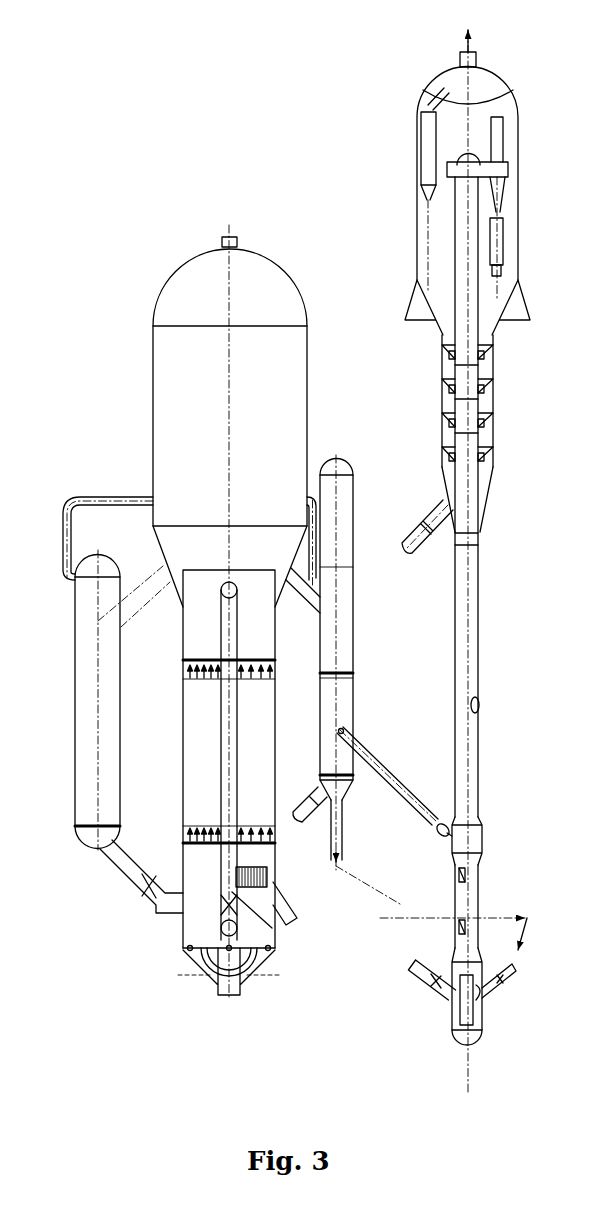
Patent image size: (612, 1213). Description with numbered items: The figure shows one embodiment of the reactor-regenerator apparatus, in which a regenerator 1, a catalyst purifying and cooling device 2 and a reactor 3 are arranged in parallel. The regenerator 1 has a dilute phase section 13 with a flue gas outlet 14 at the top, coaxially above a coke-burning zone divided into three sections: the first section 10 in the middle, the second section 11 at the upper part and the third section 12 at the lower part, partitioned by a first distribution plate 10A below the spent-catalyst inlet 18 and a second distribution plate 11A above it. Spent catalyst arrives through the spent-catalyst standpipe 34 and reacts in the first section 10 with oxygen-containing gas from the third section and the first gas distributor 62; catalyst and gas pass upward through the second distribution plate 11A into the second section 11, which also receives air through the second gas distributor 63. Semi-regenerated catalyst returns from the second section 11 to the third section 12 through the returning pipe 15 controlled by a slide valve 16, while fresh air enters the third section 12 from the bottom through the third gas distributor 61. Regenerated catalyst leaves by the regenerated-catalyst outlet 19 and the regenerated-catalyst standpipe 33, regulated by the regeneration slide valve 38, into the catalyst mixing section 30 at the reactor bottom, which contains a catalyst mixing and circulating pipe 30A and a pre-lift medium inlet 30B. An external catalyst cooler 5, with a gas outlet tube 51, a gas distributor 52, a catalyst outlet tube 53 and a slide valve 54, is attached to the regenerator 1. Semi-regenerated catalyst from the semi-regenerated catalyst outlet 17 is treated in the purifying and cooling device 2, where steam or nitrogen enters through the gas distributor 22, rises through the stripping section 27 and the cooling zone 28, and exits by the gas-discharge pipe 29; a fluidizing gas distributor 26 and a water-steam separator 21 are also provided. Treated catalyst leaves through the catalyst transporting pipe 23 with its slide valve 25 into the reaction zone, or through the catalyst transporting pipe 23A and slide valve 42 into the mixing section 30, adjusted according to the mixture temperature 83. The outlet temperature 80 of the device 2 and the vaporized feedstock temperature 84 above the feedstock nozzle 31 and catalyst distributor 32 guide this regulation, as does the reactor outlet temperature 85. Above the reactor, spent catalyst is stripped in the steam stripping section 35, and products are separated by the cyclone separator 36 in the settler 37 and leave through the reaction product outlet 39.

The regenerator 1 is at (160, 375).
The dilute phase section of regenerator 13 is at (197, 445).
The flue gas outlet 14 is at (222, 245).
The second section of regenerator 11 is at (198, 618).
The first section of regenerator 10 is at (202, 745).
The second gas distributor 63 is at (190, 660).
The first gas distributor 62 is at (188, 842).
The second distribution plate 11A is at (202, 675).
The first distribution plate 10A is at (183, 822).
The semi-regenerated catalyst returning pipe 15 is at (228, 815).
The slide valve of semi-regenerated catalyst returning pipe 16 is at (229, 906).
The regenerated-catalyst outlet 19 is at (257, 887).
The regenerated-catalyst standpipe 33 is at (283, 928).
The third section of regenerator 12 is at (191, 938).
The third gas distributor 61 is at (275, 951).
The external catalyst cooler 5 is at (83, 690).
The gas outlet tube of external catalyst cooler 51 is at (63, 515).
The gas distributor 52 is at (75, 830).
The catalyst outlet tube of external catalyst cooler 53 is at (108, 868).
The slide valve 54 is at (132, 885).
The catalyst purifying and cooling device 2 is at (352, 483).
The water-steam separator 21 is at (340, 545).
The semi-regenerated catalyst outlet 17 is at (305, 590).
The gas-discharge pipe of catalyst purifying and cooling device 29 is at (320, 552).
The cooling zone of catalyst purifying and cooling device 28 is at (345, 600).
The fluidizing gas distributor 26 is at (353, 680).
The steam stripping section of catalyst purifying and cooling device 27 is at (325, 714).
The temperature of catalyst at outlet of catalyst purifying and cooling device 80 is at (343, 730).
The gas distributor 22 is at (348, 790).
The regeneration slide valve 38 is at (333, 825).
The catalyst transporting pipe 23A is at (338, 855).
The catalyst transporting pipe 23 is at (395, 780).
The slide valve of catalyst transporting pipe 25 is at (428, 820).
The spent-catalyst standpipe 34 is at (312, 790).
The spent-catalyst inlet 18 is at (292, 820).
The reactor 3 is at (467, 677).
The settler 37 is at (518, 117).
The reaction product outlet 39 is at (476, 52).
The cyclone separator 36 is at (500, 195).
The temperature at reactor outlet 85 is at (468, 193).
The steam stripping section 35 is at (490, 415).
The catalyst distributor 32 is at (480, 825).
The feedstock nozzle 31 is at (457, 902).
The temperature of vaporized feedstock oil 84 is at (480, 880).
The temperature of catalyst mixture in catalyst mixing section 83 is at (480, 933).
The catalyst mixer and riser 30 is at (455, 955).
The catalyst mixing and circulating pipe 30A is at (462, 1030).
The pre-lift medium inlet 30B is at (472, 1046).
The slide valve 42 is at (493, 1002).